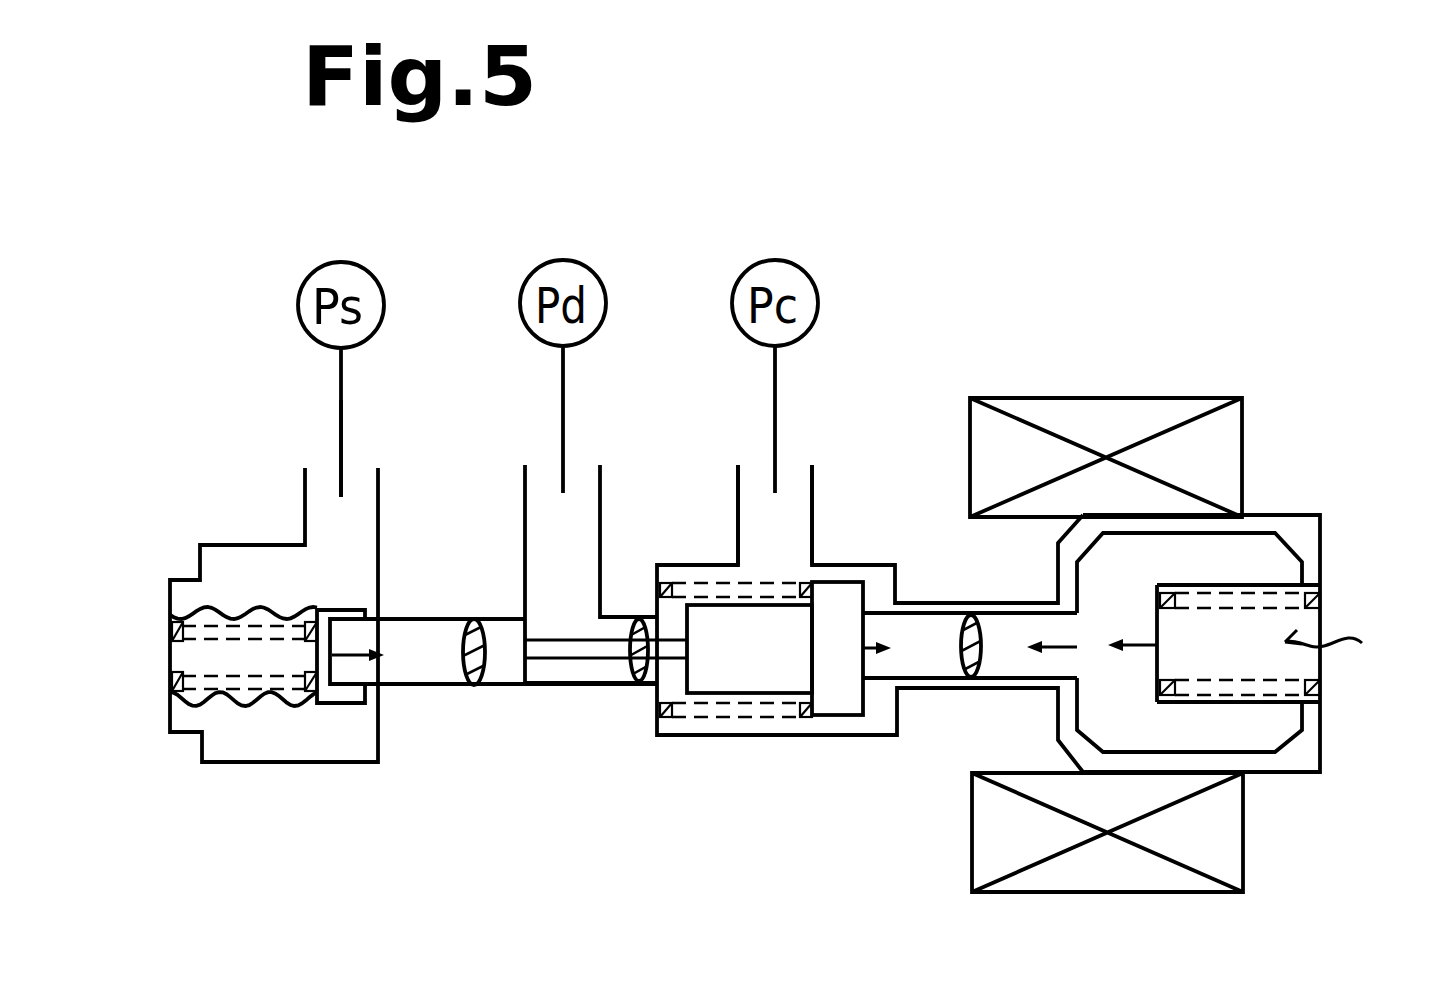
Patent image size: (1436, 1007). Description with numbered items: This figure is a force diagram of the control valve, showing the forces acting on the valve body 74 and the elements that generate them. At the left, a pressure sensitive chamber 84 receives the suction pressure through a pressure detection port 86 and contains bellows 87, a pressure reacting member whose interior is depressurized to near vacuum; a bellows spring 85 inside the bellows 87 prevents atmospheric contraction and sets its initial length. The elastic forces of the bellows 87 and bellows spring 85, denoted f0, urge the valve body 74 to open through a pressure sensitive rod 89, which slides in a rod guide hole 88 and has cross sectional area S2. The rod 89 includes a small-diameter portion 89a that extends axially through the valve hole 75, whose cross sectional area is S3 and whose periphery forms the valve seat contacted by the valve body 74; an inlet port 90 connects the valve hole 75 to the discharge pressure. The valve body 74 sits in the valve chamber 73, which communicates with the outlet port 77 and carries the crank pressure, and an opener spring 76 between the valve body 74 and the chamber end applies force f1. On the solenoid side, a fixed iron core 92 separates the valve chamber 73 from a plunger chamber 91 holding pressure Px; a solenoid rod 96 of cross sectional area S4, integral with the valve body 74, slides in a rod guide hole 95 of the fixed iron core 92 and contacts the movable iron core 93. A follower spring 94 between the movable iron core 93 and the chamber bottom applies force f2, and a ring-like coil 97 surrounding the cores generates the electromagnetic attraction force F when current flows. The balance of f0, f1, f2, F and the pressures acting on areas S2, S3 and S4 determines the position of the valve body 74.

The valve chamber 73 is at (860, 563).
The valve body 74 is at (863, 715).
The valve hole 75 is at (602, 673).
The spring 76 is at (783, 715).
The outlet port 77 is at (813, 485).
The pressure sensitive chamber 84 is at (225, 745).
The bellows spring 85 is at (298, 703).
The pressure detection port 86 is at (377, 485).
The bellows 87 is at (213, 607).
The rod guide hole 88 is at (405, 627).
The pressure sensitive rod 89 is at (437, 688).
The small-diameter portion 89a is at (553, 668).
The inlet port 90 is at (600, 485).
The plunger chamber 91 is at (1307, 540).
The fixed iron core 92 is at (948, 690).
The movable iron core 93 is at (1288, 740).
The follower spring 94 is at (1320, 695).
The rod guide hole 95 is at (930, 627).
The solenoid rod 96 is at (1013, 688).
The coil 97 is at (1242, 452).
The cross sectional area of the pressure sensitive rod S2 is at (482, 613).
The cross sectional area of the valve hole S3 is at (628, 622).
The cross sectional area of the solenoid rod S4 is at (984, 640).
The bellows force f0 is at (350, 650).
The opener spring force f1 is at (837, 650).
The follower spring force f2 is at (1140, 643).
The electromagnetic attraction force F is at (1063, 650).
The plunger chamber pressure Px is at (1352, 636).